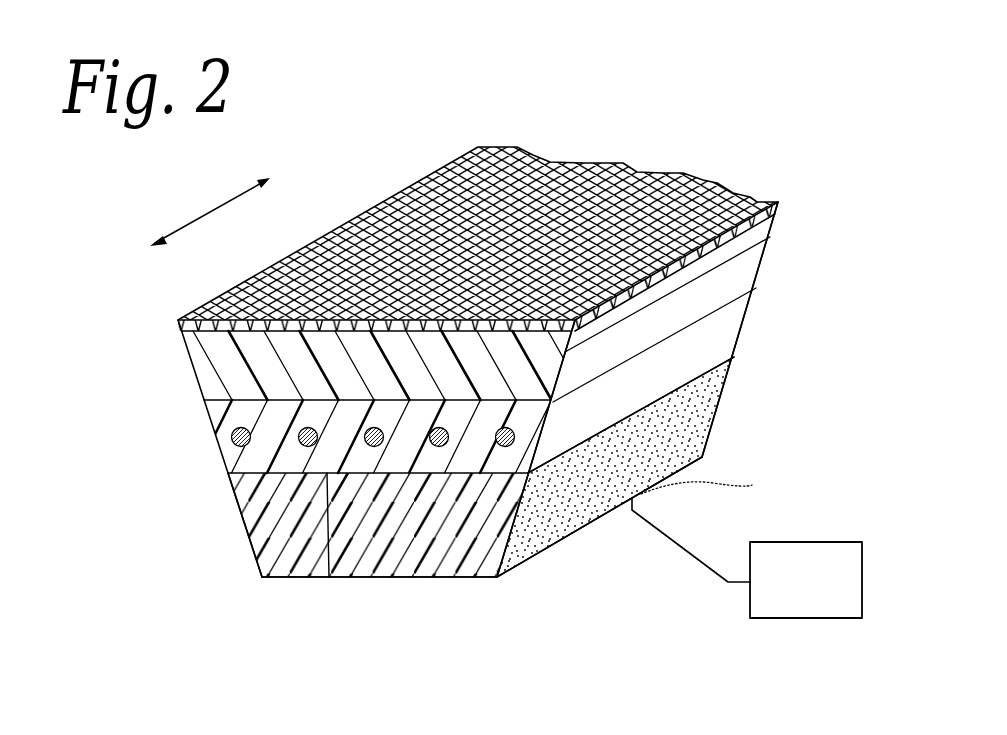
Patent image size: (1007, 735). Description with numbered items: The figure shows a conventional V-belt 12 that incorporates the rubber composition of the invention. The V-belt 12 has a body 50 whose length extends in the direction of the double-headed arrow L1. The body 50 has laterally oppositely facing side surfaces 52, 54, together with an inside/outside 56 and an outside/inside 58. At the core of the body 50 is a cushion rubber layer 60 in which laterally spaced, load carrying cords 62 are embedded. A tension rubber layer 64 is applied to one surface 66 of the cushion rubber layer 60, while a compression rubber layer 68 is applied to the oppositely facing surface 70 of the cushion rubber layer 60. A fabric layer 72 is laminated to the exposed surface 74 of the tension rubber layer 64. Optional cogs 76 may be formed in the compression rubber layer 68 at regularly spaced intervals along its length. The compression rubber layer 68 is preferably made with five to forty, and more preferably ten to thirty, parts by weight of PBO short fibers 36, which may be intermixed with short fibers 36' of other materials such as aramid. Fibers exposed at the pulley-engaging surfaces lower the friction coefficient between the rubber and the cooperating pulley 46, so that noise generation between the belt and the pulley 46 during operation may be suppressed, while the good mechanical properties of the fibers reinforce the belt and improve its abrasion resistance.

The V-belt 12 is at (321, 129).
The outside/inside 58 is at (468, 321).
The exposed surface 74 is at (233, 318).
The fabric layer 72 is at (678, 276).
The tension rubber layer 64 is at (200, 372).
The surface 66 is at (352, 398).
The cushion rubber layer 60 is at (214, 439).
The side surface 54 is at (232, 497).
The oppositely facing surface 70 is at (329, 577).
The compression rubber layer 68 is at (260, 537).
The inside/outside 56 is at (410, 584).
The body 50 is at (735, 394).
The PBO short fibers 36 is at (615, 510).
The short fibers of other materials 36' is at (664, 467).
The load carrying cords 62 is at (590, 485).
The side surface 52 is at (613, 508).
The cogs 76 is at (752, 485).
The pulley 46 is at (794, 611).
The double-headed arrow L1 is at (204, 212).